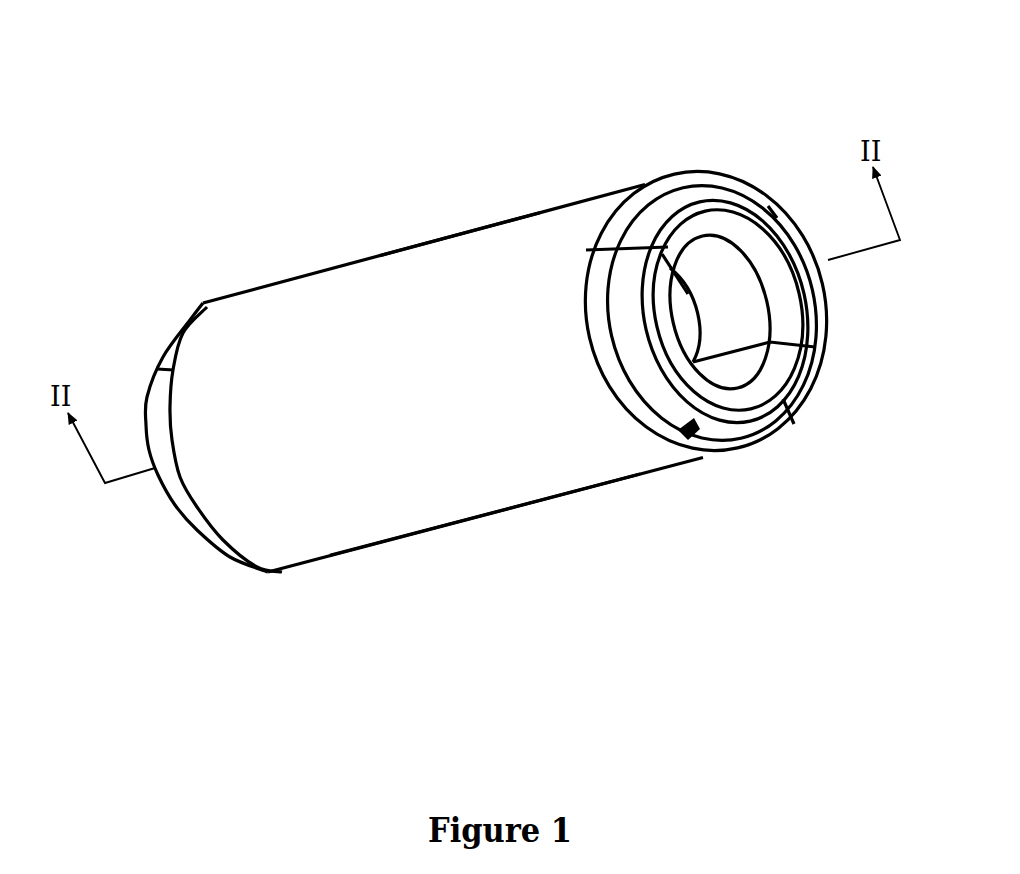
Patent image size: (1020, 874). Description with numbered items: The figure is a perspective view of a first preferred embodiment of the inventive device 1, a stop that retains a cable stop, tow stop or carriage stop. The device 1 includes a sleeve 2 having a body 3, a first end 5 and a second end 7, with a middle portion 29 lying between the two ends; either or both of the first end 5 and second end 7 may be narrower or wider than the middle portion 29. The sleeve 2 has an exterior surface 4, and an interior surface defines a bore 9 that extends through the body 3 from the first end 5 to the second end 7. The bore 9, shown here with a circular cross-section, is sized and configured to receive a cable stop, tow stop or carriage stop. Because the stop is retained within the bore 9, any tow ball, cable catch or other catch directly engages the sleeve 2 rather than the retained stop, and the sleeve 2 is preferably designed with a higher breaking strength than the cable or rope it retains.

The inventive device 1 is at (363, 177).
The sleeve 2 is at (392, 572).
The body 3 is at (340, 325).
The exterior surface 4 is at (485, 232).
The first end 5 is at (758, 188).
The second end 7 is at (142, 383).
The bore 9 is at (724, 306).
The middle portion 29 is at (563, 515).